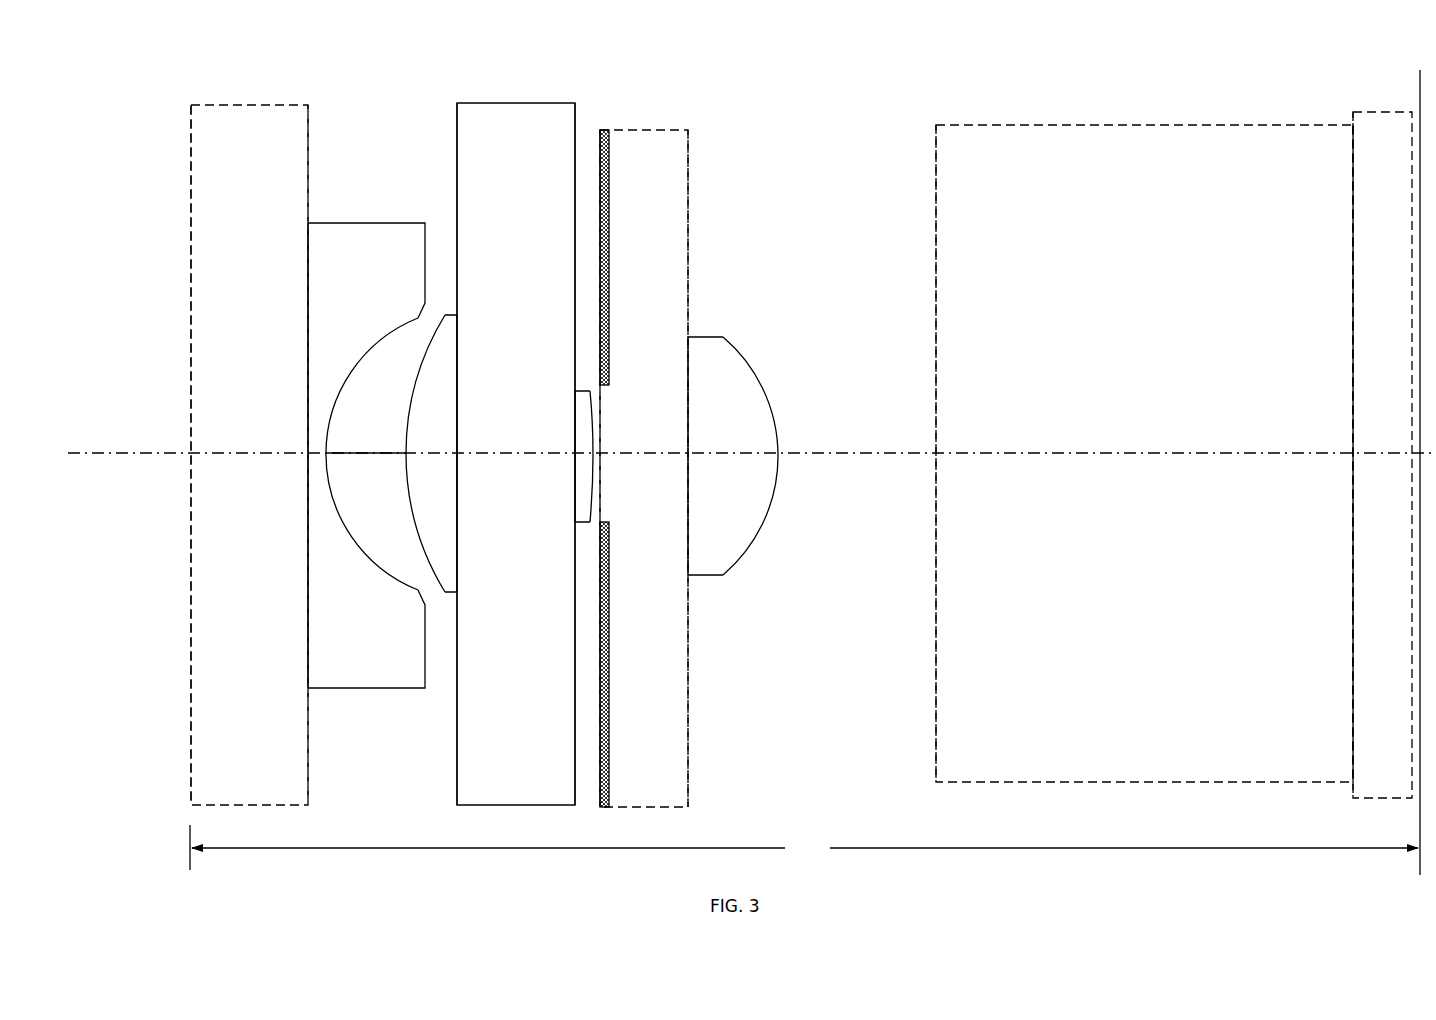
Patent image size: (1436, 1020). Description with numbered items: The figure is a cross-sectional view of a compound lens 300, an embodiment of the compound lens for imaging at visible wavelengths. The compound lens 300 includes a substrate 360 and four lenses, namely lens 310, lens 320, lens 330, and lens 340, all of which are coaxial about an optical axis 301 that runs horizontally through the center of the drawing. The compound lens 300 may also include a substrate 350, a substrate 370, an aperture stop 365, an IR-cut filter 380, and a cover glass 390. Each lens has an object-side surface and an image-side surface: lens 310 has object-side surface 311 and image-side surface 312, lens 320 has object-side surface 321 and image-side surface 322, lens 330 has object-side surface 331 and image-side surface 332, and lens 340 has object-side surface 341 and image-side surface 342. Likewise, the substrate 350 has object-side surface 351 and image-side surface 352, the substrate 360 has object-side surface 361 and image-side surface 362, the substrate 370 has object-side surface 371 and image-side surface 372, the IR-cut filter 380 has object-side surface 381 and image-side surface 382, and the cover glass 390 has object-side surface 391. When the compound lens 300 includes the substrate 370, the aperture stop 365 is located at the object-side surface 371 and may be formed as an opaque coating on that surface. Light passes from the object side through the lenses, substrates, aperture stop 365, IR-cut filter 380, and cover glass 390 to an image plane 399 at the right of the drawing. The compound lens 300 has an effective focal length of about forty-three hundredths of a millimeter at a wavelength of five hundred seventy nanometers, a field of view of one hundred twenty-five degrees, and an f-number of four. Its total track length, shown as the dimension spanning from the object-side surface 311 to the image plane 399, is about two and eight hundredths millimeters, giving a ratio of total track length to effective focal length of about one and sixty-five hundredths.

The compound lens 300 is at (155, 51).
The optical axis 301 is at (108, 452).
The lens 310 is at (326, 450).
The object-side surface 311 is at (306, 243).
The image-side surface 312 is at (330, 477).
The lens 320 is at (434, 438).
The object-side surface 321 is at (403, 430).
The image-side surface 322 is at (461, 333).
The lens 330 is at (582, 456).
The object-side surface 331 is at (574, 408).
The image-side surface 332 is at (596, 437).
The lens 340 is at (763, 438).
The object-side surface 341 is at (687, 341).
The image-side surface 342 is at (782, 459).
The substrate 350 is at (256, 455).
The object-side surface 351 is at (189, 170).
The image-side surface 352 is at (310, 172).
The substrate 360 is at (492, 433).
The object-side surface 361 is at (455, 127).
The image-side surface 362 is at (579, 108).
The aperture stop 365 is at (610, 160).
The substrate 370 is at (662, 454).
The object-side surface 371 is at (602, 133).
The image-side surface 372 is at (691, 148).
The IR-cut filter 380 is at (1115, 453).
The object-side surface 381 is at (934, 170).
The image-side surface 382 is at (1357, 255).
The cover glass 390 is at (1347, 446).
The object-side surface 391 is at (1351, 120).
The image plane 399 is at (1418, 95).